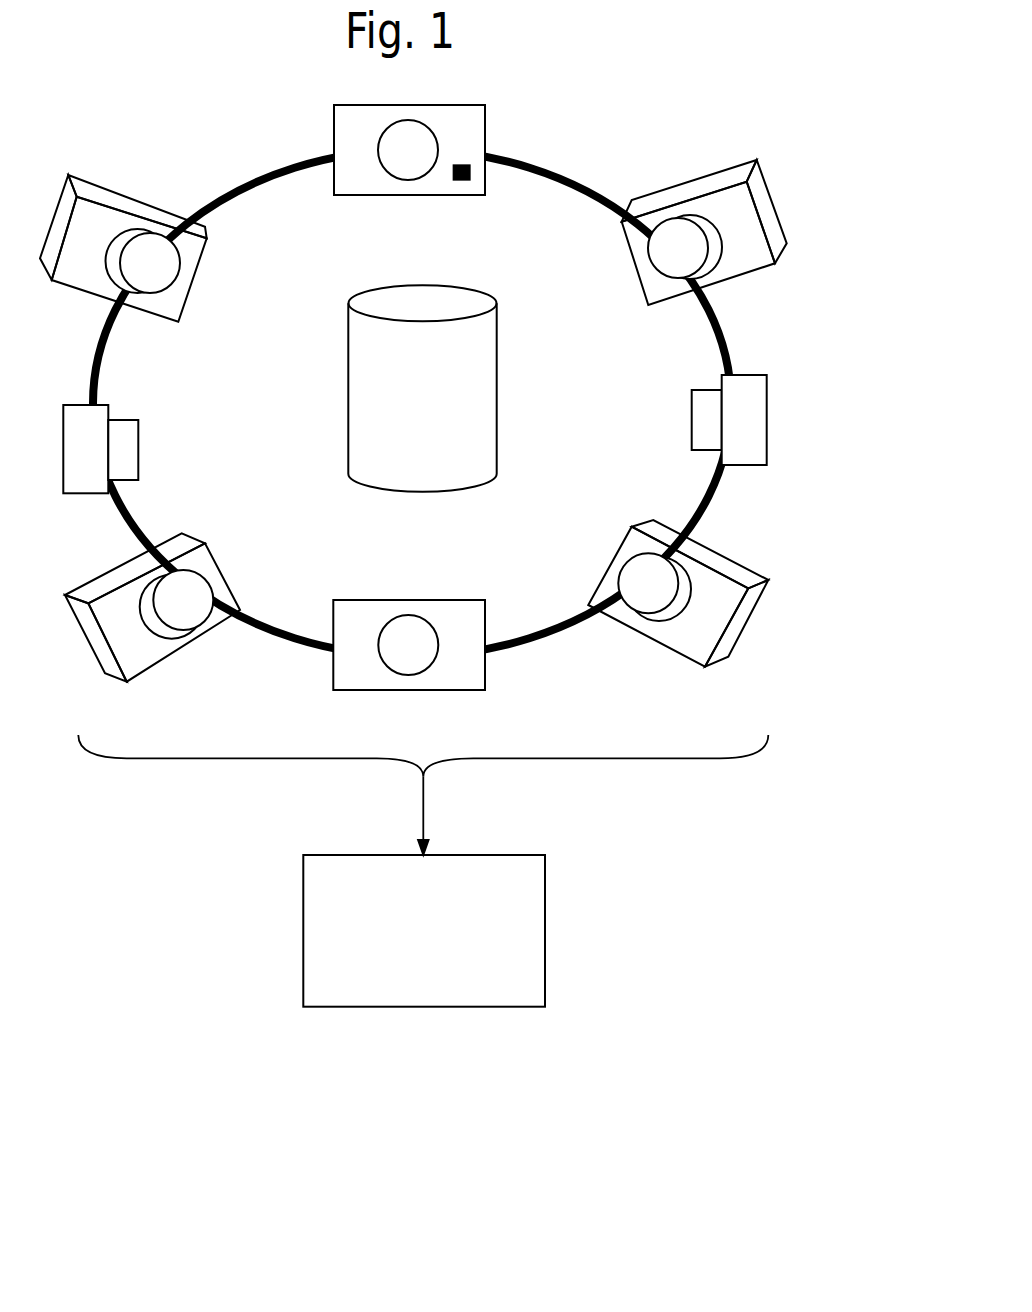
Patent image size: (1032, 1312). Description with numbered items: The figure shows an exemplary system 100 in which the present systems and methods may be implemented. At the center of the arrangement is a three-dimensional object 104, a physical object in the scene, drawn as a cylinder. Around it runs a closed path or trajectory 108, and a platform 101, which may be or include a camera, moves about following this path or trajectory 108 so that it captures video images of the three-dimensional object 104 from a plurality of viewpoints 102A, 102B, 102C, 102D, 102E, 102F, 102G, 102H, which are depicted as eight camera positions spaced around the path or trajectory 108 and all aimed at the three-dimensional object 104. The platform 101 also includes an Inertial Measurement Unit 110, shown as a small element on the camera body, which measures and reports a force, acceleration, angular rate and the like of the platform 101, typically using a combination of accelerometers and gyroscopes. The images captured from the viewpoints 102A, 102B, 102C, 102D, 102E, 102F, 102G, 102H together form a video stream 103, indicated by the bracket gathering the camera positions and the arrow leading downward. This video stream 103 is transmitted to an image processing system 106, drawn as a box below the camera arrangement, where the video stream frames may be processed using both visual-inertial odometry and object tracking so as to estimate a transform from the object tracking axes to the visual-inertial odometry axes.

The system 100 is at (808, 1236).
The platform 101 is at (333, 122).
The viewpoint 102A is at (465, 170).
The viewpoint 102B is at (757, 160).
The viewpoint 102C is at (753, 380).
The viewpoint 102D is at (715, 513).
The viewpoint 102E is at (442, 605).
The viewpoint 102F is at (215, 558).
The viewpoint 102G is at (140, 437).
The viewpoint 102H is at (203, 240).
The video stream 103 is at (423, 827).
The three-dimensional (3D) object 104 is at (422, 388).
The image processing system 106 is at (424, 931).
The path or trajectory 108 is at (596, 183).
The Inertial Measurement Unit (IMU) 110 is at (463, 177).